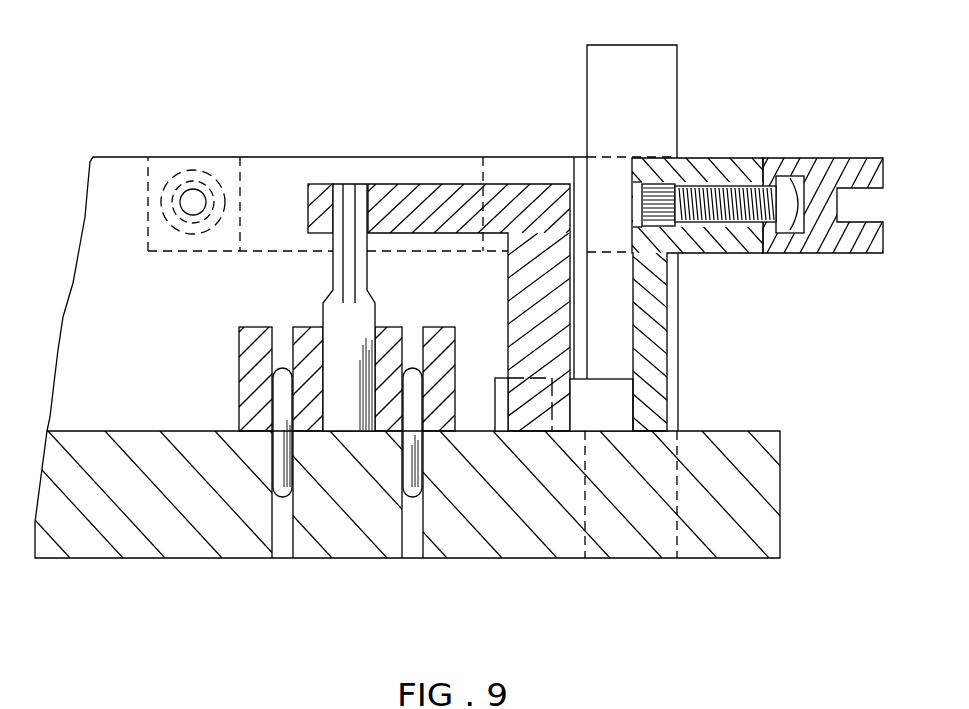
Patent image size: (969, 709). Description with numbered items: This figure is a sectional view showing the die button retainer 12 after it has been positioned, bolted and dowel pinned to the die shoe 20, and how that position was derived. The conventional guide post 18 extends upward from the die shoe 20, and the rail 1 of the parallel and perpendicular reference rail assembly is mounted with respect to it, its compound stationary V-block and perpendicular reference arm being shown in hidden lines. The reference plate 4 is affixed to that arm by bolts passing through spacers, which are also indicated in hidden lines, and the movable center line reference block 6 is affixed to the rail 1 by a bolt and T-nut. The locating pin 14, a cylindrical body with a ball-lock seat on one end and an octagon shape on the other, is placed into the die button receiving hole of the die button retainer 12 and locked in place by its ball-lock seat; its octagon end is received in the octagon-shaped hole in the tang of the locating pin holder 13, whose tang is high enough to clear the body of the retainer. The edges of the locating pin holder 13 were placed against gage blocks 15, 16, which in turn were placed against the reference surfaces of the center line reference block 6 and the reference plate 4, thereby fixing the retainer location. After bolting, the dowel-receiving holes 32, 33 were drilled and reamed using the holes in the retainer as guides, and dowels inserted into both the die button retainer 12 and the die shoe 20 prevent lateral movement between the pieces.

The rail 1 is at (828, 230).
The reference plate 4 is at (148, 298).
The center line reference block 6 is at (657, 357).
The die button retainer 12 is at (303, 328).
The locating pin holder 13 is at (435, 210).
The locating pin 14 is at (353, 382).
The gage block 15 is at (498, 407).
The gage block 16 is at (602, 413).
The guide post 18 is at (640, 128).
The die shoe 20 is at (155, 510).
The dowel-receiving hole 32 is at (280, 390).
The dowel-receiving hole 33 is at (413, 398).